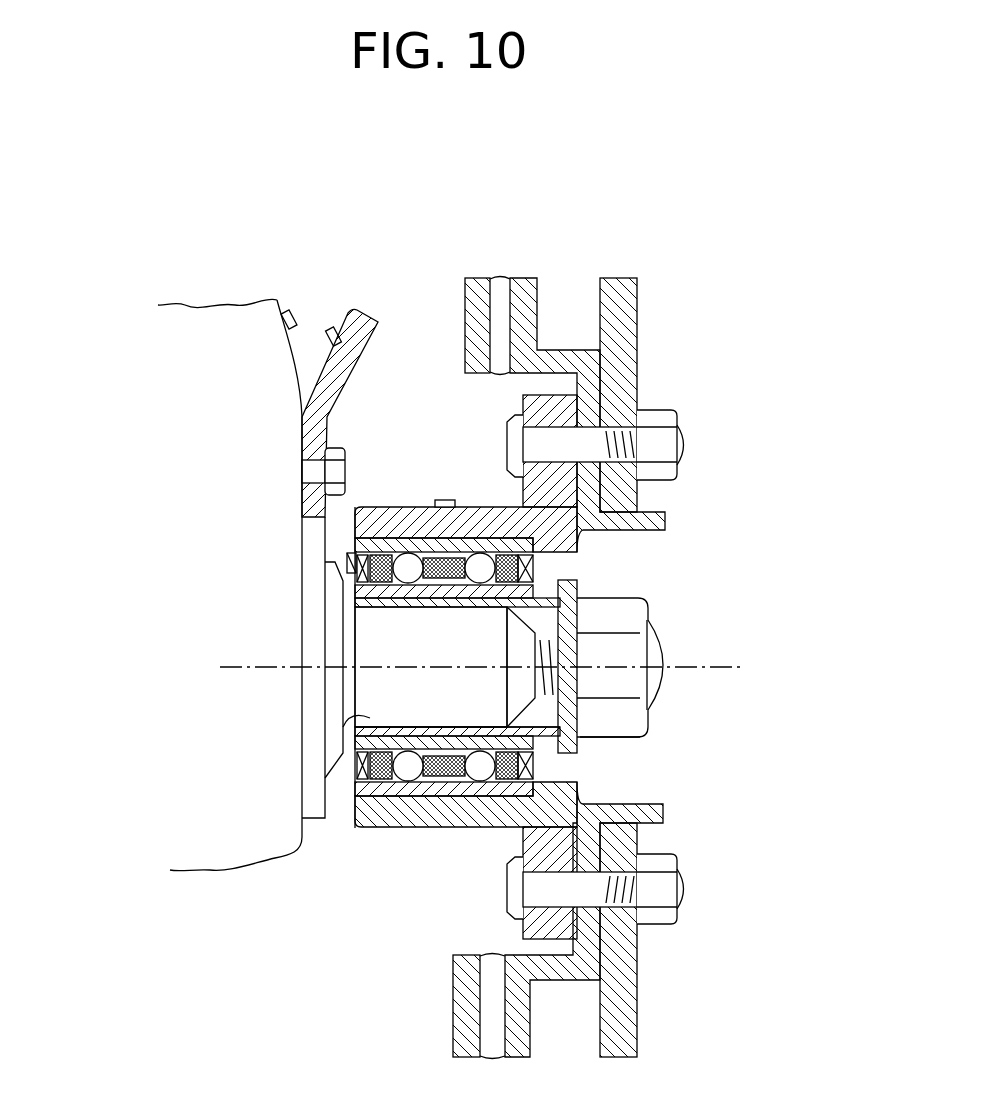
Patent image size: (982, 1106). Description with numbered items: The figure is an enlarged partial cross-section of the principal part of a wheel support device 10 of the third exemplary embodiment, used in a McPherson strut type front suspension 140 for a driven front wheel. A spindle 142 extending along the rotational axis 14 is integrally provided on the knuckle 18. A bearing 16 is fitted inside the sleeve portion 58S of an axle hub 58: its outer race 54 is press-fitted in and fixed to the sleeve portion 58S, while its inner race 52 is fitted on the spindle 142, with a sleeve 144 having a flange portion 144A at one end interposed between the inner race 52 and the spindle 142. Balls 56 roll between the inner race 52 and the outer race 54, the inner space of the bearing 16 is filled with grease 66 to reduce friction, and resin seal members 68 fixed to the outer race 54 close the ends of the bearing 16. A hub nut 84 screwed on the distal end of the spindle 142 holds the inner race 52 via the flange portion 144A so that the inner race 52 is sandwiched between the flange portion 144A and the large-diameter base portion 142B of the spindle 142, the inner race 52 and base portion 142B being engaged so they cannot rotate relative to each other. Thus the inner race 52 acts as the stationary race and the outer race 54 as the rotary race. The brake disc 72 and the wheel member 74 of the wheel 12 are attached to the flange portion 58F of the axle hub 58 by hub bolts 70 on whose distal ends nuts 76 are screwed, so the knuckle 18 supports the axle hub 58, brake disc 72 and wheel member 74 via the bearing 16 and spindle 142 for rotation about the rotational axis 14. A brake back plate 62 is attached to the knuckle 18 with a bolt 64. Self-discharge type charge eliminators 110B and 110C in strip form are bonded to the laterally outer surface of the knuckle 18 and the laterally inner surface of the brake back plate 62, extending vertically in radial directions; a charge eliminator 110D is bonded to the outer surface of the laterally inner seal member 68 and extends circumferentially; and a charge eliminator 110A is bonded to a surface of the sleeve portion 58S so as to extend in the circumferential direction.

The wheel support device 10 is at (236, 520).
The wheel 12 is at (667, 283).
The rotational axis 14 is at (742, 663).
The bearing 16 is at (345, 783).
The knuckle 18 is at (190, 858).
The inner race 52 is at (383, 600).
The outer race 54 is at (402, 793).
The balls 56 is at (410, 563).
The axle hub 58 is at (633, 800).
The flange portion 58F is at (585, 490).
The sleeve portion 58S is at (458, 817).
The brake back plate 62 is at (316, 398).
The bolt 64 is at (312, 474).
The grease 66 is at (447, 727).
The seal member 68 is at (535, 565).
The hub bolt 70 is at (607, 943).
The brake disc 72 is at (537, 310).
The wheel member 74 is at (630, 357).
The nut 76 is at (672, 887).
The hub nut 84 is at (634, 653).
The self-discharge type charge eliminator 110A is at (445, 500).
The self-discharge type charge eliminator 110B is at (293, 312).
The self-discharge type charge eliminator 110C is at (333, 328).
The self-discharge type charge eliminator 110D is at (346, 565).
The front suspension 140 is at (175, 288).
The spindle 142 is at (370, 688).
The large-diameter base portion 142B is at (350, 622).
The sleeve 144 is at (353, 716).
The flange portion 144A is at (610, 745).